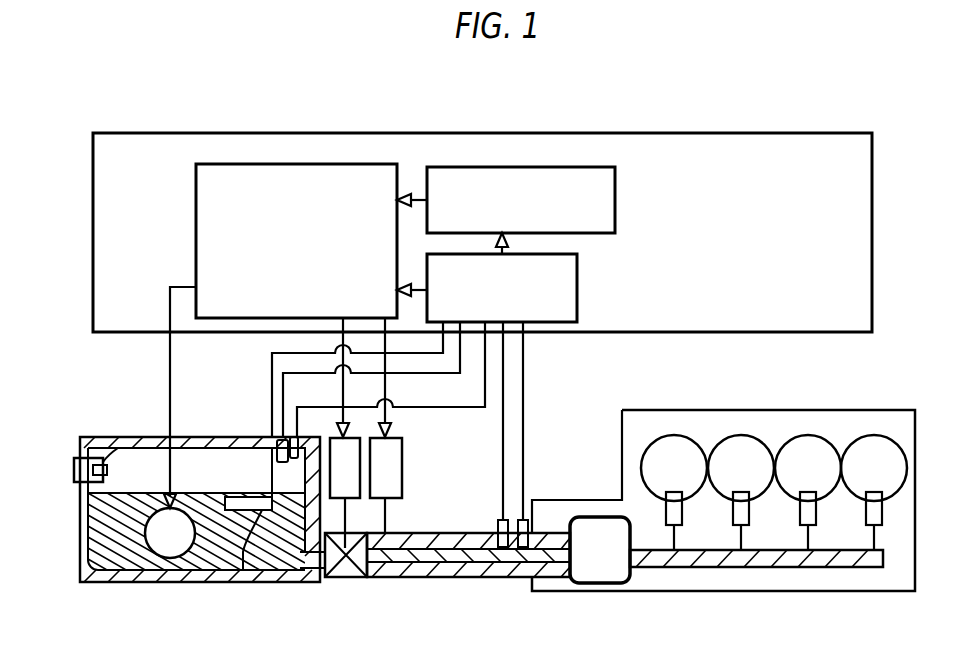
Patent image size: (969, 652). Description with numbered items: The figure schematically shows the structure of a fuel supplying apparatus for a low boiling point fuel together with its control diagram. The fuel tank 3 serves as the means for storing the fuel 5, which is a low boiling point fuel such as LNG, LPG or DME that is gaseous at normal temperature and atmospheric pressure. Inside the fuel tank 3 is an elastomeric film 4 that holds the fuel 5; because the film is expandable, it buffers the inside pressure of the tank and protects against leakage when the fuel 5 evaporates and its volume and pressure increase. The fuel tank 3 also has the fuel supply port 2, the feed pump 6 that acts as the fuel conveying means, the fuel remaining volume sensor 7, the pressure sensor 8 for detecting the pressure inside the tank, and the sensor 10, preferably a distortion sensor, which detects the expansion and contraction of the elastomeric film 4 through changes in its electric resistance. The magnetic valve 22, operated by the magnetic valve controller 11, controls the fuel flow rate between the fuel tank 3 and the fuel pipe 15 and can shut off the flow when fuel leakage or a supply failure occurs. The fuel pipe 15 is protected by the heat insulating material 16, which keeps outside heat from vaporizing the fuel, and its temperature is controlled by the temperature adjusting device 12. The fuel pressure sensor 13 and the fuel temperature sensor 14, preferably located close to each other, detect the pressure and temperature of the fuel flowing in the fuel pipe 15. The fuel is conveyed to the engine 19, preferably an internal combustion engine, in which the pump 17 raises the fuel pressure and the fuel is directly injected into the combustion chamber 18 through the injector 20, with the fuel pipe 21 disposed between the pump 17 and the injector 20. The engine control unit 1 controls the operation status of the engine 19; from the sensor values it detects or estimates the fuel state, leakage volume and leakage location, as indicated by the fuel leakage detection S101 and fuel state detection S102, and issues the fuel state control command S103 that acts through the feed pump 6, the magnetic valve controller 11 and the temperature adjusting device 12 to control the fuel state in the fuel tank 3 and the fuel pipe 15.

The engine control unit 1 is at (815, 152).
The fuel state control command S103 is at (196, 190).
The fuel leakage detection S101 is at (615, 183).
The fuel state detection S102 is at (577, 272).
The fuel supply port 2 is at (73, 460).
The fuel tank 3 is at (90, 437).
The elastomeric film 4 is at (121, 437).
The fuel 5 is at (118, 576).
The feed pump 6 is at (173, 560).
The fuel remaining volume sensor 7 is at (245, 565).
The pressure sensor 8 is at (277, 442).
The sensor 10 is at (292, 437).
The magnetic valve controller 11 is at (388, 444).
The temperature adjusting device 12 is at (388, 478).
The fuel pressure sensor 13 is at (500, 520).
The fuel temperature sensor 14 is at (523, 520).
The fuel pipe 15 is at (412, 580).
The heat insulating material 16 is at (482, 582).
The pump 17 is at (602, 584).
The combustion chamber 18 is at (674, 436).
The engine 19 is at (884, 420).
The injector 20 is at (689, 512).
The fuel pipe 21 is at (792, 567).
The magnetic valve 22 is at (342, 580).